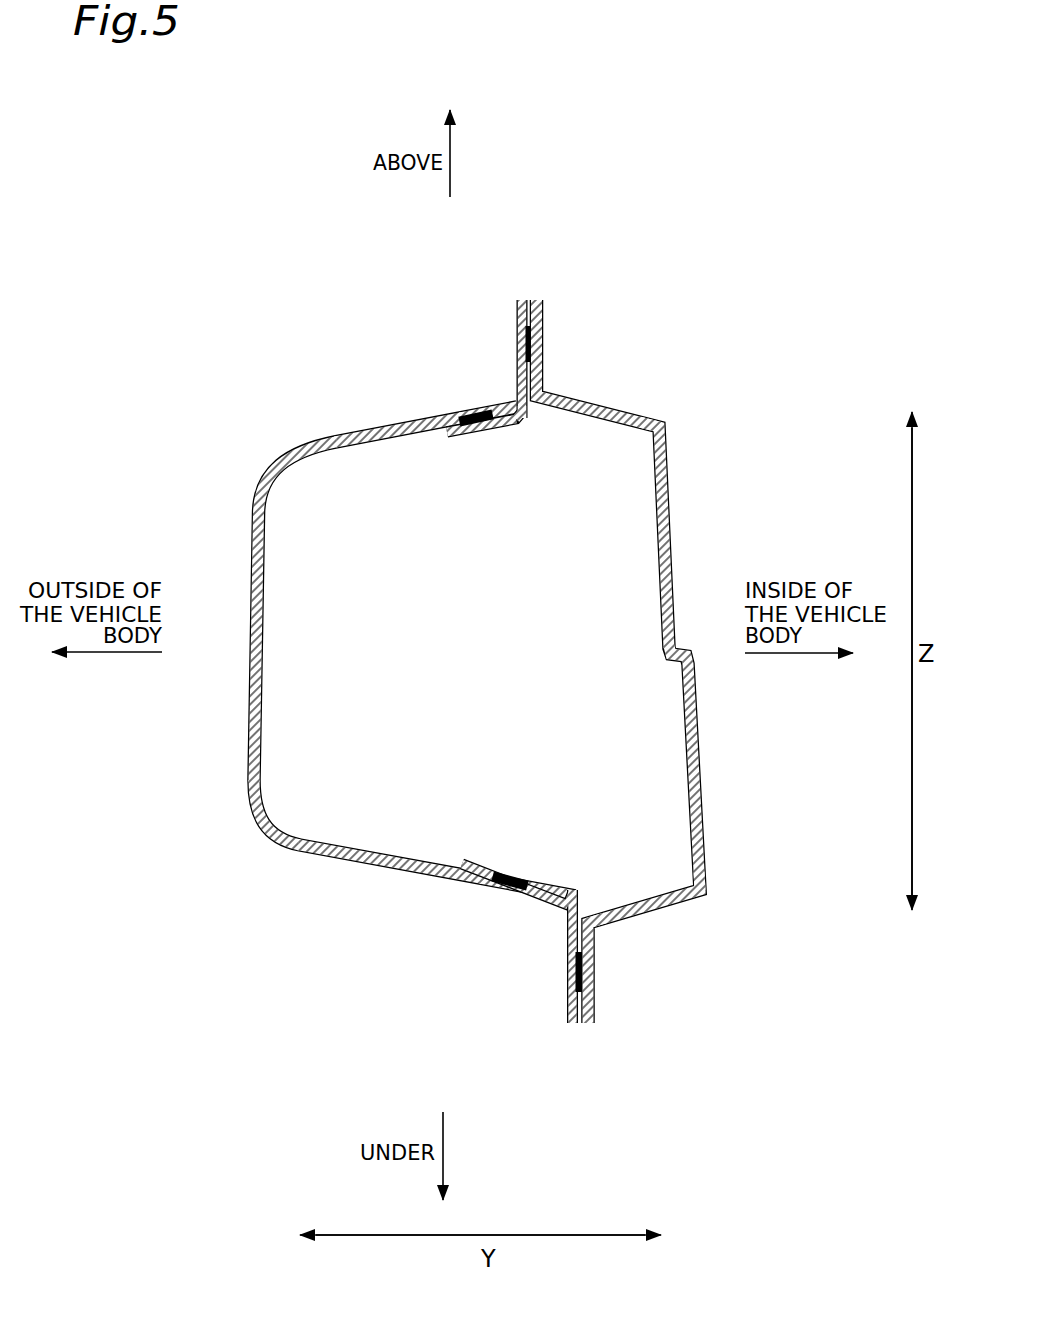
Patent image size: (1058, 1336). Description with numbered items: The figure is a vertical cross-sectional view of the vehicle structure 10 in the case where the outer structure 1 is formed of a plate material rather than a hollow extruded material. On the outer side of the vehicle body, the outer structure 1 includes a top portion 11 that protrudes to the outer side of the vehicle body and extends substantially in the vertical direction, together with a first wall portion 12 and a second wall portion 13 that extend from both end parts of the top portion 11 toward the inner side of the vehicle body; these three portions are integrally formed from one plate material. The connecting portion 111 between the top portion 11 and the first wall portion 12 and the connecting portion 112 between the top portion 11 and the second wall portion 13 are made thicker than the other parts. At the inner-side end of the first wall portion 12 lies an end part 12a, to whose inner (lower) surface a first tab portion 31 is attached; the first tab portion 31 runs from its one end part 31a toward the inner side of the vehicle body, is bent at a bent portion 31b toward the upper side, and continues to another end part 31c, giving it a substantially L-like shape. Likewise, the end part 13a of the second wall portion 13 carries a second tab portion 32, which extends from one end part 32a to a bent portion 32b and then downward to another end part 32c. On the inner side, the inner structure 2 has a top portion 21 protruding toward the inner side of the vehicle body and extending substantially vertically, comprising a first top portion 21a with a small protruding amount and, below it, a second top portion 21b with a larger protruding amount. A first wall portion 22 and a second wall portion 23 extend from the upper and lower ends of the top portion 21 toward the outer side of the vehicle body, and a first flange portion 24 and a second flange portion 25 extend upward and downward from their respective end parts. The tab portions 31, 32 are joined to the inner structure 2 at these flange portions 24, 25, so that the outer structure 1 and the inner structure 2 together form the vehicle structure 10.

The outer structure 1 is at (291, 364).
The inner structure 2 is at (715, 366).
The vehicle structure 10 is at (540, 218).
The top portion 11 is at (252, 541).
The connecting portion 111 is at (265, 478).
The connecting portion 112 is at (250, 826).
The first wall portion 12 is at (352, 432).
The end part 12a is at (447, 408).
The second wall portion 13 is at (378, 868).
The end part 13a is at (490, 895).
The top portion 21 is at (711, 420).
The first top portion 21a is at (667, 548).
The second top portion 21b is at (697, 770).
The first wall portion 22 is at (607, 405).
The second wall portion 23 is at (662, 903).
The first flange portion 24 is at (545, 319).
The second flange portion 25 is at (594, 1022).
The first tab portion 31 is at (493, 347).
The one end part 31a is at (502, 428).
The bent portion 31b is at (530, 425).
The another end part 31c is at (517, 300).
The second tab portion 32 is at (539, 942).
The one end part 32a is at (505, 878).
The bent portion 32b is at (580, 888).
The another end part 32c is at (572, 1026).